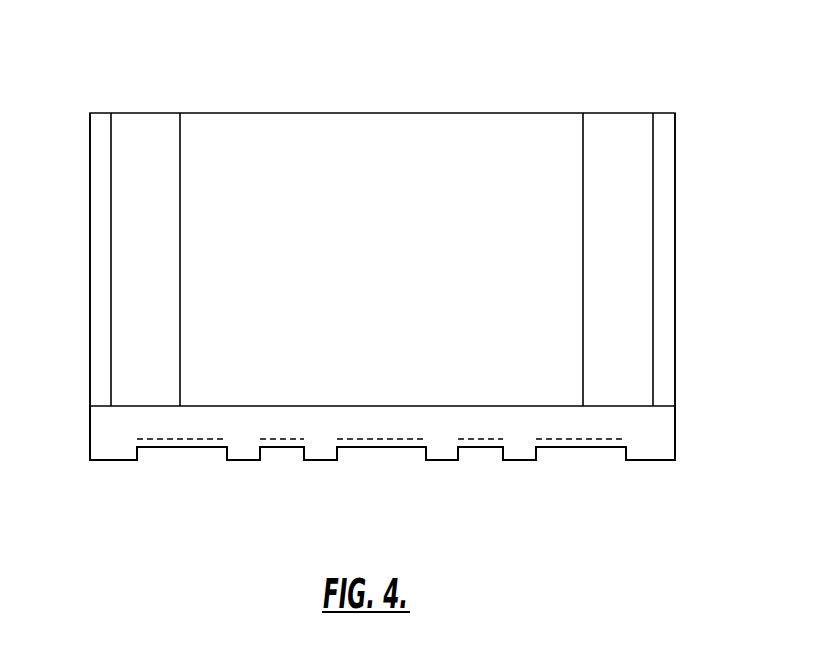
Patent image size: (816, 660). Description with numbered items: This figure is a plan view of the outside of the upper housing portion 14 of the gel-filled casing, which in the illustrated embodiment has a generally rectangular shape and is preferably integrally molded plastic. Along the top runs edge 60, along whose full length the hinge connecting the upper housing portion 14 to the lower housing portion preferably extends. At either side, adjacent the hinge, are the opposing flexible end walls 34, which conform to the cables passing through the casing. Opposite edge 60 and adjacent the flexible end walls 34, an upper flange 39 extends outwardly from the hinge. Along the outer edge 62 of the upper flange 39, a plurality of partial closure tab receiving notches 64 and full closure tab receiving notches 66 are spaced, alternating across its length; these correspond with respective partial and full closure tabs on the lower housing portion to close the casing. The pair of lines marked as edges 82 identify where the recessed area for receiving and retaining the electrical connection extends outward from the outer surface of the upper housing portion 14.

The upper housing portion 14 is at (674, 62).
The edge 60 is at (527, 112).
The edges 82 is at (180, 140).
The flexible end walls 34 is at (93, 273).
The upper flange 39 is at (663, 428).
The outer edge 62 is at (100, 461).
The full closure tab receiving notches 66 is at (170, 448).
The partial closure tab receiving notches 64 is at (275, 448).